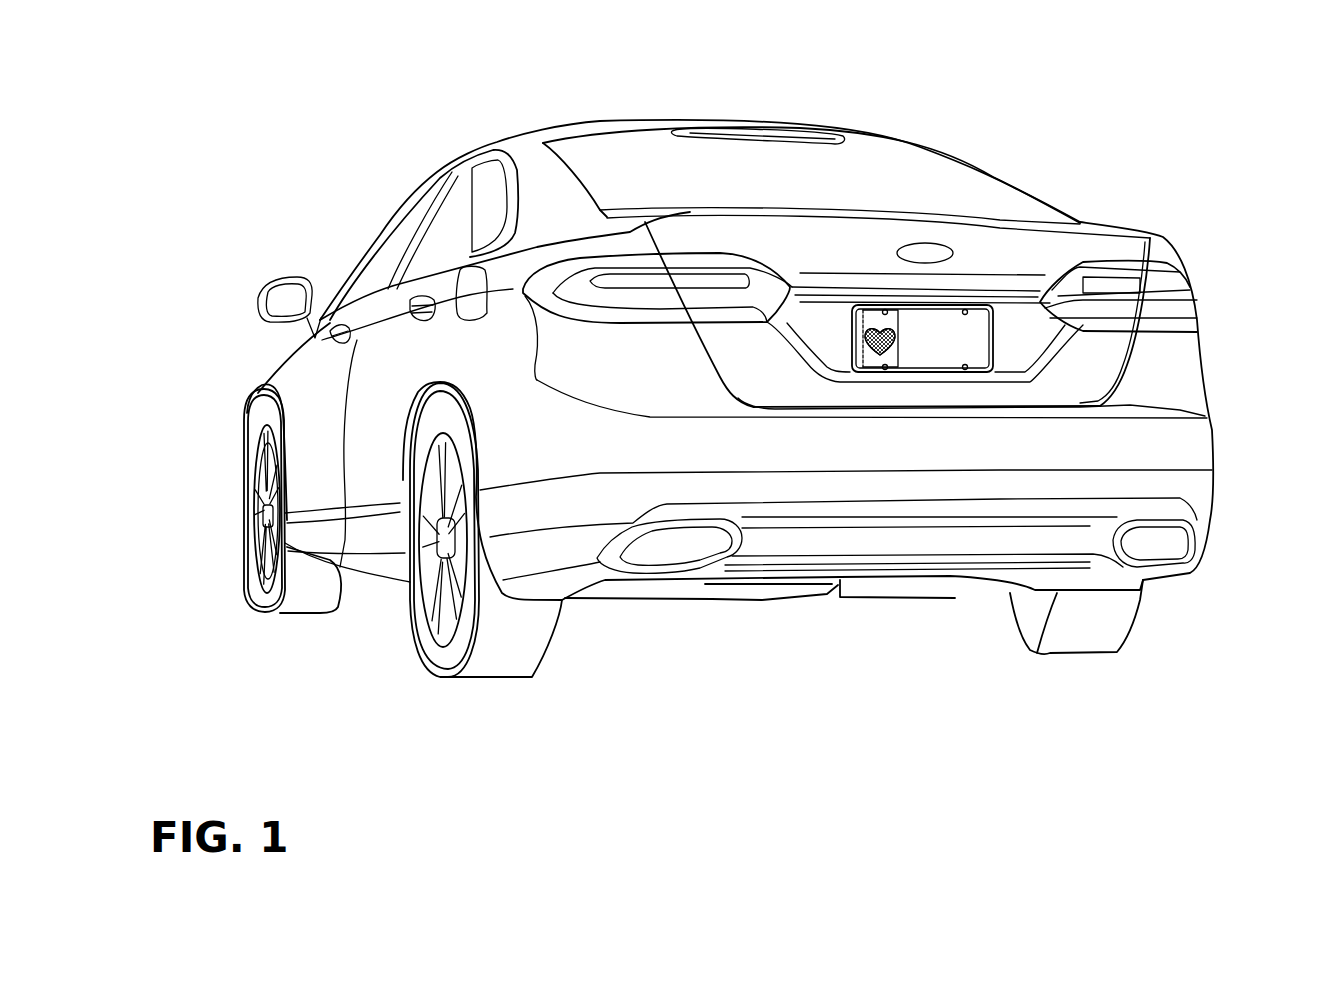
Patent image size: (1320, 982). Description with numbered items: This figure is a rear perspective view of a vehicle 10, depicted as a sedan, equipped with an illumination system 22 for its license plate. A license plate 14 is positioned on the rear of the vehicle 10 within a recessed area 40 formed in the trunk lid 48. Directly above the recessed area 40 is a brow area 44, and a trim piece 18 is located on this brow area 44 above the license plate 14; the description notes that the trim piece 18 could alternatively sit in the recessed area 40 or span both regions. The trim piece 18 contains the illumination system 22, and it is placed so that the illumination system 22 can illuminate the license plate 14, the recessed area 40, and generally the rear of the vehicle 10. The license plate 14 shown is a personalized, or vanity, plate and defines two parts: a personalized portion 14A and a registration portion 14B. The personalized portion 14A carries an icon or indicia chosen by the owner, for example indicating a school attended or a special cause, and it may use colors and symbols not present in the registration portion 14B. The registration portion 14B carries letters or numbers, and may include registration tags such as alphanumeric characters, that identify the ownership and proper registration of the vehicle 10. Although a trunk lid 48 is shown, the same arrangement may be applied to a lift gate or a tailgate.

The vehicle 10 is at (270, 357).
The license plate 14 is at (925, 375).
The personalized portion 14A is at (874, 352).
The registration portion 14B is at (978, 352).
The trim piece 18 is at (991, 273).
The illumination system 22 is at (931, 266).
The recessed area 40 is at (1027, 336).
The brow area 44 is at (1057, 266).
The trunk lid 48 is at (690, 252).